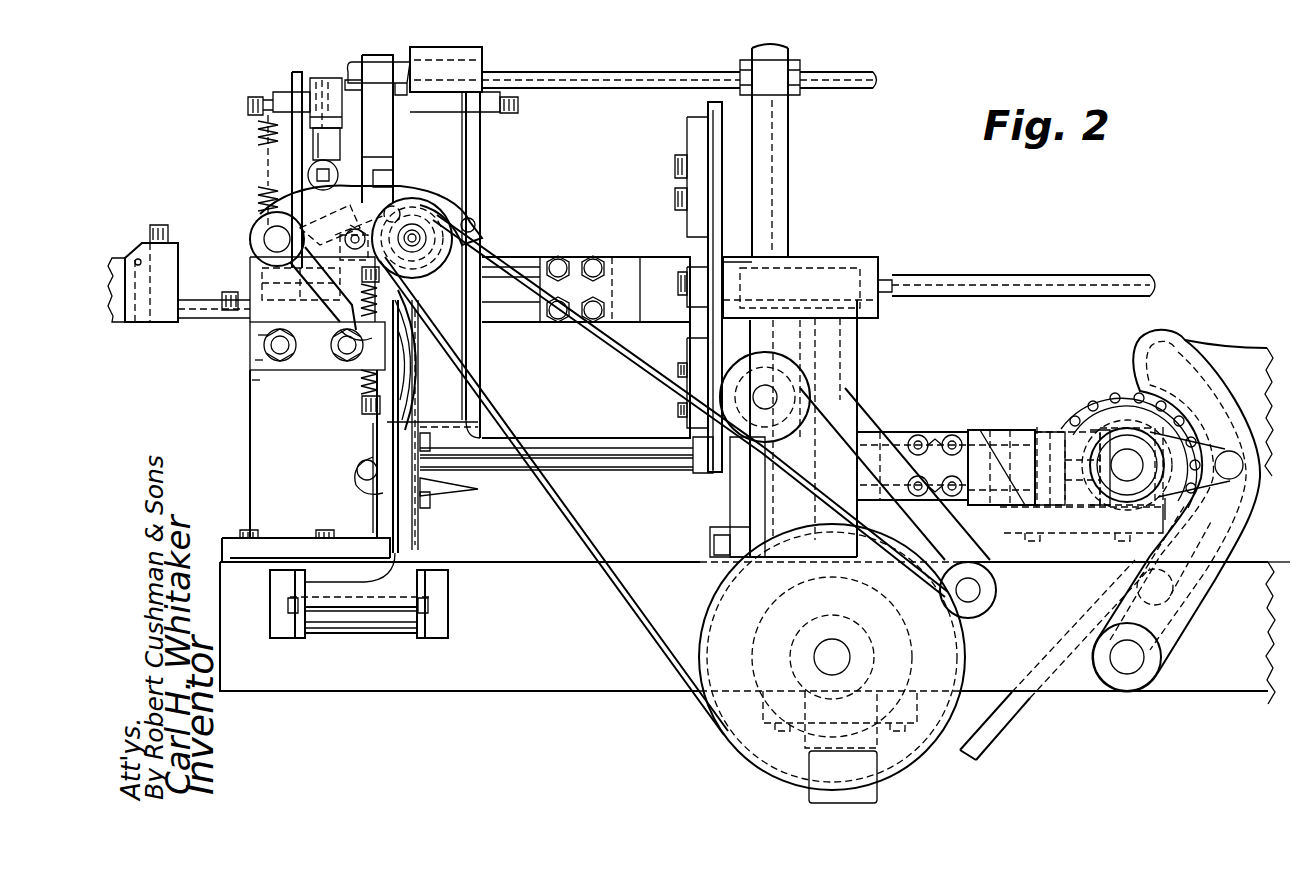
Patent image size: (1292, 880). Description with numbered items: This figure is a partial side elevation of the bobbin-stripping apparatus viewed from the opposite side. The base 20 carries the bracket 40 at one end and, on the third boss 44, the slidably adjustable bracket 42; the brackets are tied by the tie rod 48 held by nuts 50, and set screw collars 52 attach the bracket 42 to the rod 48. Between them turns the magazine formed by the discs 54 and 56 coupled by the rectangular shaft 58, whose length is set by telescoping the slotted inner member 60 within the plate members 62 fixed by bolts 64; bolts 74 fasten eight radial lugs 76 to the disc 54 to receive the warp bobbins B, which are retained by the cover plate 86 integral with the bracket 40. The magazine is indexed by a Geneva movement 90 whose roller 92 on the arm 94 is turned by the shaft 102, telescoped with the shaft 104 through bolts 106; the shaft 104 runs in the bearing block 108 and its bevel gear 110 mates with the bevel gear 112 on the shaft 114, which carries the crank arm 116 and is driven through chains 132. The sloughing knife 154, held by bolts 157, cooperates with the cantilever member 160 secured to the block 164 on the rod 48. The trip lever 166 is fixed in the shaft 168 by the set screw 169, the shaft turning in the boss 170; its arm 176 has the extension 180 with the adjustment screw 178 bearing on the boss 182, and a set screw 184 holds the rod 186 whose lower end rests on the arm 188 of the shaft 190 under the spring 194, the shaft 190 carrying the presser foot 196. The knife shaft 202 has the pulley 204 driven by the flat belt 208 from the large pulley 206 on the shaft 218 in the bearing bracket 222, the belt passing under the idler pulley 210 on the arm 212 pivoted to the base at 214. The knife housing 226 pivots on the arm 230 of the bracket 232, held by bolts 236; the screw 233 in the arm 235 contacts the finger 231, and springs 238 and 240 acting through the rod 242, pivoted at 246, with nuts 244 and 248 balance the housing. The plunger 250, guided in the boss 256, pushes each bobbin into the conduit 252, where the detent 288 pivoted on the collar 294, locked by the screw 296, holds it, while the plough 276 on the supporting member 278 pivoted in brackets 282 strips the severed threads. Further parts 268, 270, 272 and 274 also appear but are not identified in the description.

The base 20 is at (1238, 688).
The bracket 40 is at (250, 405).
The third bracket 42 is at (857, 382).
The third boss 44 is at (642, 568).
The tie rod 48 is at (846, 72).
The nuts 50 is at (352, 64).
The set screw collars 52 is at (748, 75).
The disc 54 is at (720, 160).
The disc 56 is at (362, 440).
The rectangular shaft 58 is at (584, 250).
The slotted inner member 60 is at (520, 262).
The plate members 62 is at (645, 262).
The bolts 64 is at (575, 289).
The bolts 74 is at (677, 185).
The lugs 76 is at (688, 138).
The cover plate 86 is at (371, 129).
The Geneva movement 90 is at (737, 516).
The roller 92 is at (714, 545).
The arm 94 is at (735, 488).
The shaft 102 is at (872, 432).
The shaft 104 is at (960, 432).
The bolts 106 is at (937, 465).
The bearing block 108 is at (1010, 432).
The bevel gear 110 is at (1118, 400).
The second bevel gear 112 is at (1127, 455).
The shaft 114 is at (1128, 478).
The crank arm 116 is at (1183, 518).
The chains 132 is at (1000, 735).
The sloughing knife 154 is at (447, 510).
The bolts 157 is at (410, 540).
The cantilever member 160 is at (482, 404).
The block 164 is at (482, 60).
The trip lever 166 is at (482, 348).
The shaft 168 is at (498, 115).
The set screw 169 is at (520, 106).
The boss 170 is at (350, 86).
The arm 176 is at (325, 88).
The adjustment screw 178 is at (258, 190).
The extension 180 is at (313, 152).
The boss 182 is at (308, 174).
The set screw 184 is at (248, 106).
The rod 186 is at (292, 88).
The arm 188 is at (262, 232).
The shaft 190 is at (365, 212).
The spring 194 is at (258, 128).
The bifurcated presser foot 196 is at (406, 288).
The shaft 202 is at (418, 240).
The pulley 204 is at (478, 226).
The large driving pulley 206 is at (706, 616).
The flat belt 208 is at (630, 604).
The tension regulating idler pulley 210 is at (798, 382).
The arm 212 is at (830, 410).
The pivot 214 is at (982, 590).
The shaft 218 is at (834, 652).
The bearing bracket 222 is at (879, 796).
The rotary knife housing 226 is at (250, 242).
The arm 230 is at (250, 280).
The finger 231 is at (256, 374).
The bracket 232 is at (255, 360).
The screw 233 is at (172, 340).
The arm 235 is at (262, 336).
The bolts 236 is at (330, 362).
The spring 238 is at (398, 330).
The spring 240 is at (362, 414).
The rod 242 is at (356, 398).
The nuts 244 is at (380, 403).
The pivot 246 is at (402, 205).
The nuts 248 is at (317, 343).
The plunger 250 is at (940, 286).
The conduit 252 is at (232, 322).
The boss 256 is at (842, 264).
The cam 268 is at (1232, 340).
The roller 270 is at (1127, 672).
The cam track 272 is at (1168, 348).
The lever 274 is at (1250, 522).
The plough 276 is at (410, 368).
The supporting member 278 is at (352, 636).
The brackets 282 is at (430, 642).
The detent 288 is at (114, 258).
The collar 294 is at (152, 282).
The screw 296 is at (160, 226).
The warp bobbin B is at (626, 455).